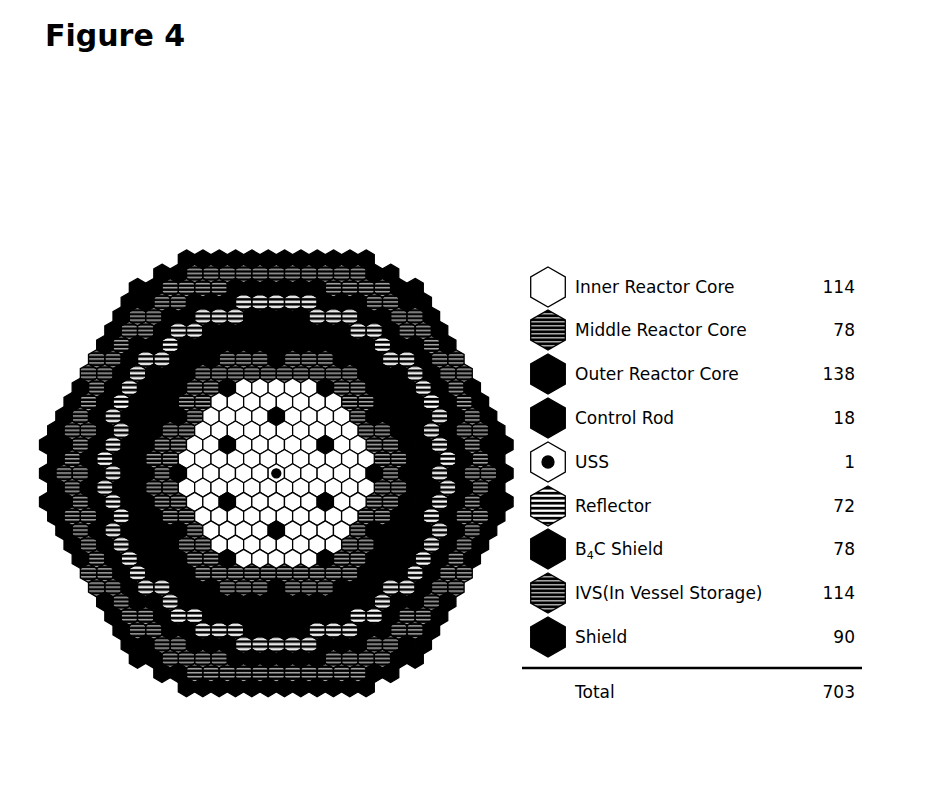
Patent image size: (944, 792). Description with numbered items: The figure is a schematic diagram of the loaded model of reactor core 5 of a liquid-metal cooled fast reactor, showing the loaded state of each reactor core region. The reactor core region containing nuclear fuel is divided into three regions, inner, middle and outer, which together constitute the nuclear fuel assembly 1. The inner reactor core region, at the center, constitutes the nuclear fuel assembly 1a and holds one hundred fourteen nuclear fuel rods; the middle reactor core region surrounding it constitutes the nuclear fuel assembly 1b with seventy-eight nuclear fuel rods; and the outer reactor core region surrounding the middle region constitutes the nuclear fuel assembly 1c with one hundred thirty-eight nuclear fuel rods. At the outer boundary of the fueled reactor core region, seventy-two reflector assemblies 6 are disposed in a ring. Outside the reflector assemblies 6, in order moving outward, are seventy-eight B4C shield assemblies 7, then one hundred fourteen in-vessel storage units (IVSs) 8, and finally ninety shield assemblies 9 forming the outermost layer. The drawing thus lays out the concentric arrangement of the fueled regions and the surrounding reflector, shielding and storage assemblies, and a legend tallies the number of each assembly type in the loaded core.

The nuclear fuel assembly 1 is at (342, 397).
The nuclear fuel assembly of the inner reactor core region 1a is at (410, 362).
The nuclear fuel assembly of the middle reactor core region 1b is at (345, 355).
The nuclear fuel assembly of the outer reactor core region 1c is at (306, 430).
The loaded model of reactor core 5 is at (267, 226).
The reflector assembly 6 is at (293, 251).
The B4C shield assembly 7 is at (236, 250).
The IVS (In-Vessel Storage Unit) 8 is at (293, 698).
The shield assembly 9 is at (438, 641).